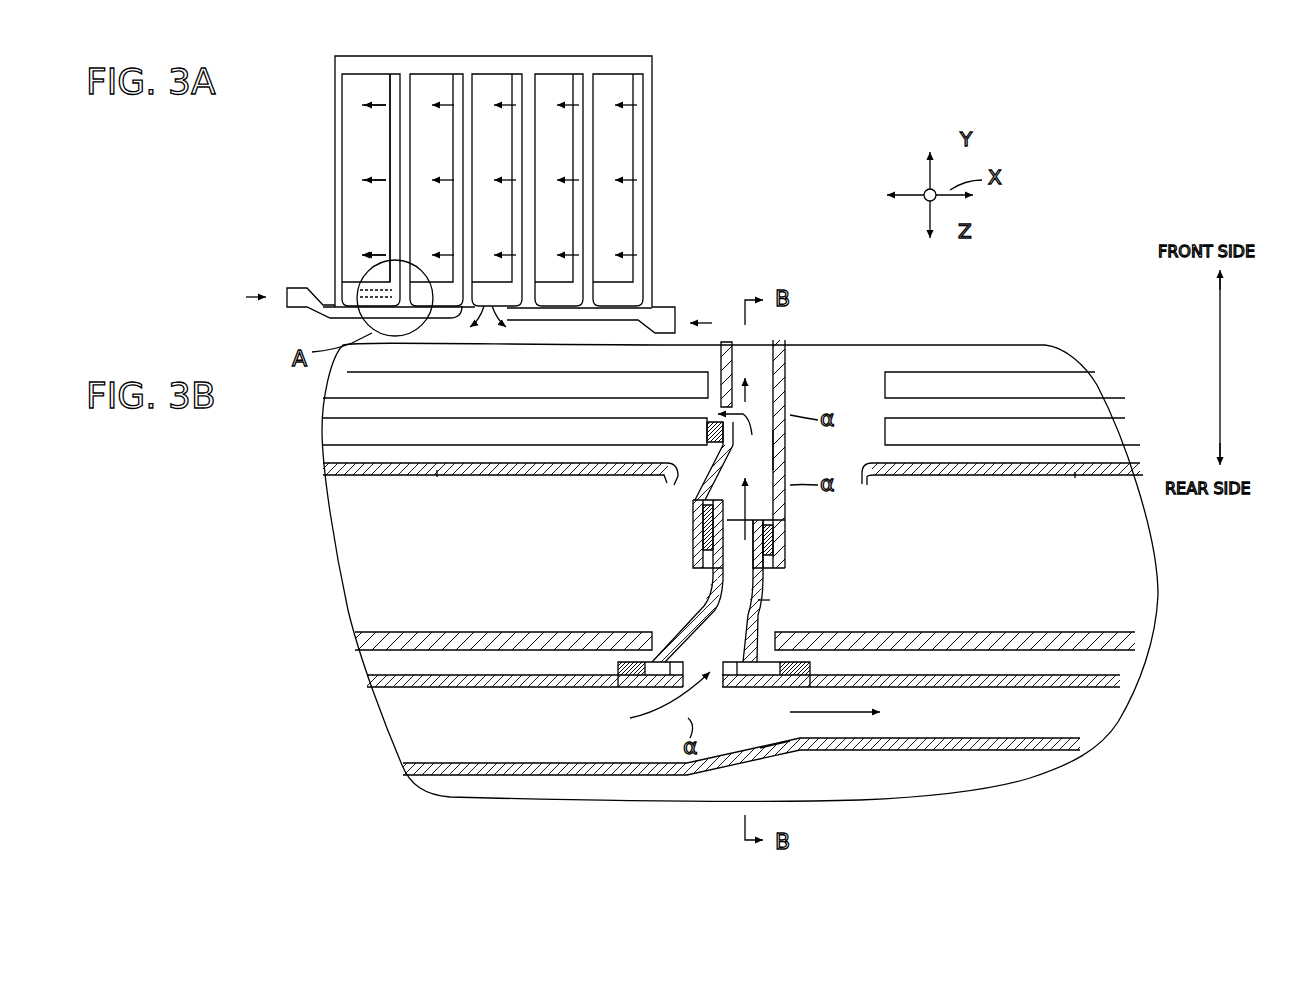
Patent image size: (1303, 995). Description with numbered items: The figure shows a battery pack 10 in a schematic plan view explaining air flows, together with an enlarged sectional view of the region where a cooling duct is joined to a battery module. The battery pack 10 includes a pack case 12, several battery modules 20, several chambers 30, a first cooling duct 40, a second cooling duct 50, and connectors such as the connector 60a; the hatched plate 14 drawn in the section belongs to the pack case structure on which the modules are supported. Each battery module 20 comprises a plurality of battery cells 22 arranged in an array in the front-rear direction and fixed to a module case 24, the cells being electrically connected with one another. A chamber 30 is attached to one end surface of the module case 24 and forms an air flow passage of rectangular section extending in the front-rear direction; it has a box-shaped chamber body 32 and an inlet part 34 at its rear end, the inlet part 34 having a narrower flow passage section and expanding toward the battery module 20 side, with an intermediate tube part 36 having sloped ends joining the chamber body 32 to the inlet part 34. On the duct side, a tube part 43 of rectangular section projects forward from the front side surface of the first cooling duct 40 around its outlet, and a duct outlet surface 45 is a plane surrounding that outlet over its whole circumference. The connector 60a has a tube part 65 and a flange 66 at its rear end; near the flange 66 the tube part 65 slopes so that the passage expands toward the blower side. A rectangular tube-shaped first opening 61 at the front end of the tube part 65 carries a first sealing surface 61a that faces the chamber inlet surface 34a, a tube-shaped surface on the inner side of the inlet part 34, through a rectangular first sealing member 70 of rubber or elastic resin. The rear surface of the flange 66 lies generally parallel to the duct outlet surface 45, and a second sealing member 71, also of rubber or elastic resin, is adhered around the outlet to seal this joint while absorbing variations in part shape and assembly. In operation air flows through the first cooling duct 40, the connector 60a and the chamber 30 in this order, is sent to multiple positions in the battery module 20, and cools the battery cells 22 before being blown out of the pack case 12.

In FIG. 3A, the battery pack 10 is at (672, 113).
In FIG. 3B, the battery pack 10 is at (403, 651).
In FIG. 3B, the pack case 12 is at (1082, 630).
In FIG. 3B, the plate 14 is at (1000, 630).
In FIG. 3A, the battery module 20 is at (368, 80).
In FIG. 3B, the battery module 20 is at (437, 477).
In FIG. 3B, the battery cell 22 is at (350, 383).
In FIG. 3A, the module case 24 is at (355, 197).
In FIG. 3B, the module case 24 is at (405, 472).
In FIG. 3A, the chamber 30 is at (390, 140).
In FIG. 3B, the chamber 30 is at (738, 348).
In FIG. 3B, the chamber body 32 is at (785, 365).
In FIG. 3B, the inlet part 34 is at (700, 550).
In FIG. 3B, the chamber inlet surface 34a is at (787, 568).
In FIG. 3B, the intermediate tube part 36 is at (787, 452).
In FIG. 3A, the first cooling duct 40 is at (312, 310).
In FIG. 3B, the first cooling duct 40 is at (485, 780).
In FIG. 3B, the tube part 43 is at (690, 668).
In FIG. 3B, the duct outlet surface 45 is at (758, 585).
In FIG. 3A, the second cooling duct 50 is at (558, 318).
In FIG. 3A, the connector 60a is at (385, 290).
In FIG. 3B, the connector 60a is at (770, 600).
In FIG. 3B, the first opening 61 is at (780, 520).
In FIG. 3B, the first sealing surface 61a is at (695, 530).
In FIG. 3B, the tube part 65 is at (705, 590).
In FIG. 3B, the flange 66 is at (758, 690).
In FIG. 3B, the first sealing member 70 is at (775, 540).
In FIG. 3B, the second sealing member 71 is at (783, 748).